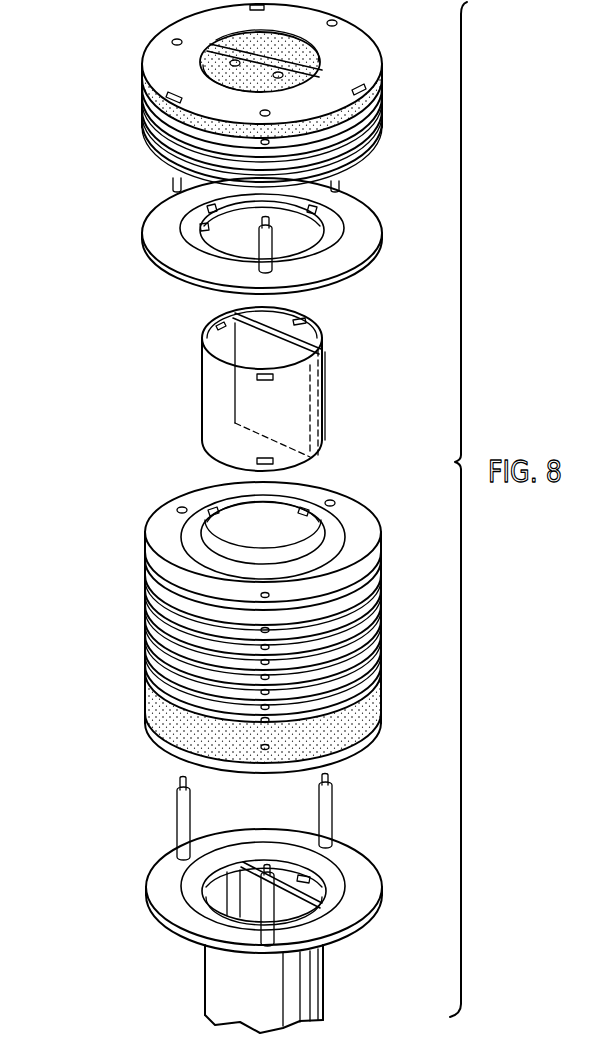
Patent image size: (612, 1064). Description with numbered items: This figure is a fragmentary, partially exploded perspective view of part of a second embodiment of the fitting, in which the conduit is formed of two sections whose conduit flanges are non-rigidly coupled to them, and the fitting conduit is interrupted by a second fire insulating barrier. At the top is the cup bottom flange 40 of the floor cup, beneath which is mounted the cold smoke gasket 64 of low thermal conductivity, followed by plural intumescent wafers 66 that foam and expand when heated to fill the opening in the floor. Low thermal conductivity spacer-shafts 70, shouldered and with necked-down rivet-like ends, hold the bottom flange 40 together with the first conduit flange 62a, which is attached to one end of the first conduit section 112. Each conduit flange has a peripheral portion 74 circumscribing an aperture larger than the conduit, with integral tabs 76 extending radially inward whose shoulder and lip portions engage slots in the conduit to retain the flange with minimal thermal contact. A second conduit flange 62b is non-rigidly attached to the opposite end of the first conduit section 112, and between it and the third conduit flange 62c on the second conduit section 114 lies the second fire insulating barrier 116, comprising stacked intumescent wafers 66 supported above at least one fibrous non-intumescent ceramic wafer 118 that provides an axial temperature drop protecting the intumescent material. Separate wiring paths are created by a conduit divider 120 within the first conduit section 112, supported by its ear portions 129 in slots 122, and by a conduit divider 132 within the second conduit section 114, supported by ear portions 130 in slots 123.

The cup bottom flange 40 is at (372, 38).
The cold smoke gasket 64 is at (374, 94).
The intumescent wafers 66 is at (373, 128).
The first conduit flange 62a is at (376, 244).
The spacer-shafts 70 is at (248, 243).
The peripheral portion 74 is at (318, 263).
The slots 122 is at (233, 306).
The conduit divider 120 is at (277, 343).
The ear portions 129 is at (323, 358).
The first conduit section 112 is at (206, 402).
The tabs 76 is at (299, 511).
The second conduit flange 62b is at (285, 529).
The second fire insulating barrier 116 is at (242, 614).
The ceramic wafer 118 is at (375, 722).
The slots 123 is at (234, 862).
The ear portions 130 is at (258, 862).
The conduit divider 132 is at (287, 898).
The third conduit flange 62c is at (291, 877).
The second conduit section 114 is at (214, 976).